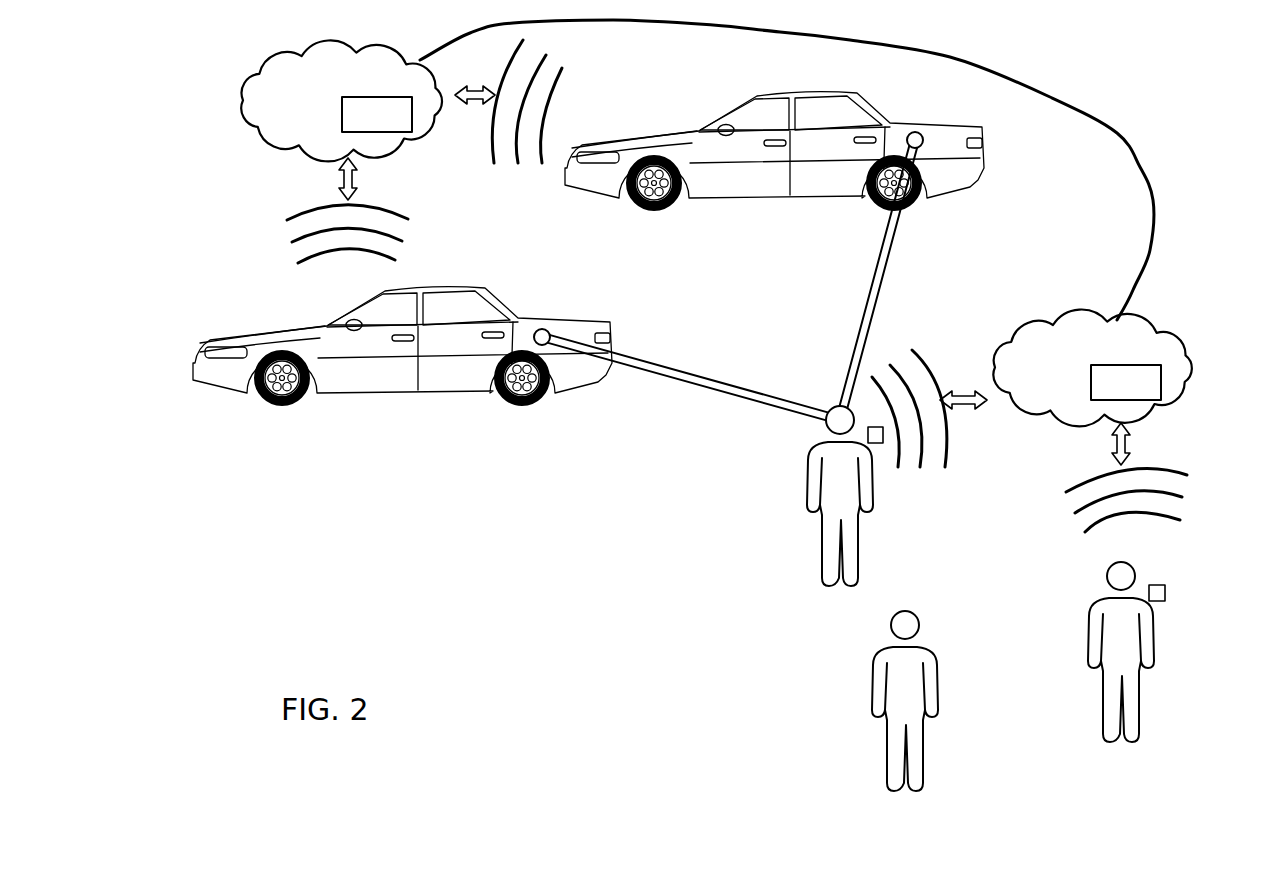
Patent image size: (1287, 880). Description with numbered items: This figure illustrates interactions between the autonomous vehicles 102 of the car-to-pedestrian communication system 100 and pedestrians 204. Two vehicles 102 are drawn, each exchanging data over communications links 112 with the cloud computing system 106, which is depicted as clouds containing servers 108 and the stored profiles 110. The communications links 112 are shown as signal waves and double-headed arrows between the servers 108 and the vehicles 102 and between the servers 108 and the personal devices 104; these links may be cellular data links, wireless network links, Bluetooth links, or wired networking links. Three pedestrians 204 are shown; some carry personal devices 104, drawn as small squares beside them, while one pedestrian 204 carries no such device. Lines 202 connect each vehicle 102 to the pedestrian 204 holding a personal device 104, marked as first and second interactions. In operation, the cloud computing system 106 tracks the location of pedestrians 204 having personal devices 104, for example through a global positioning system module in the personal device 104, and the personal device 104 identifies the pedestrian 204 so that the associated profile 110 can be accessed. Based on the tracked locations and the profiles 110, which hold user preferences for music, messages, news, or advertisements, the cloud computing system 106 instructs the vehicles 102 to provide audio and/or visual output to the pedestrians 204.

The car-to-pedestrian communication system 100 is at (236, 174).
The autonomous vehicle 102 is at (454, 281).
The personal device 104 is at (876, 444).
The cloud computing system 106 is at (1118, 117).
The server 108 is at (326, 99).
The profile 110 is at (400, 129).
The communications link 112 is at (478, 129).
The communication link 202 is at (867, 297).
The pedestrian 204 is at (795, 478).